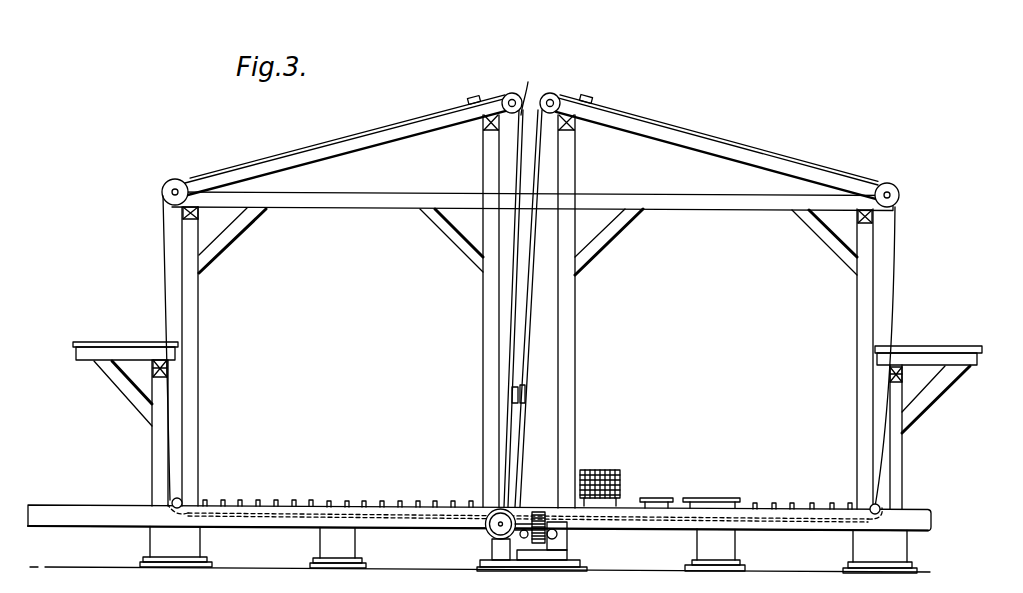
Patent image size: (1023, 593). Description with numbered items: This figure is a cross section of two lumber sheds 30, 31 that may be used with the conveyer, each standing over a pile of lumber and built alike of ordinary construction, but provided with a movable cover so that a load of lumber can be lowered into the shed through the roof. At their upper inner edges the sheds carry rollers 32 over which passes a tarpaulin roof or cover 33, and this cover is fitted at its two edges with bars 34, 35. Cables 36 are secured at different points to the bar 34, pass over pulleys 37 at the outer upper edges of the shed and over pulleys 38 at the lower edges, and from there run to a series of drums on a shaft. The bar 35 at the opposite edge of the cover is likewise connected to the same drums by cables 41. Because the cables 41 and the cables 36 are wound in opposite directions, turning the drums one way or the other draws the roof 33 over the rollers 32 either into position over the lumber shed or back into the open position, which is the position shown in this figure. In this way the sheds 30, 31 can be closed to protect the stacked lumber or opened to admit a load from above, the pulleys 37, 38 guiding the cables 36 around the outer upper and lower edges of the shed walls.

The lumber shed 30 is at (715, 312).
The lumber shed 31 is at (340, 311).
The roller 32 is at (554, 96).
The tarpaulin roof or cover 33 is at (518, 89).
The bar 34 is at (470, 98).
The bar 35 is at (514, 391).
The cable 36 is at (782, 158).
The pulley 37 is at (898, 199).
The pulley 38 is at (172, 500).
The cable 41 is at (521, 452).